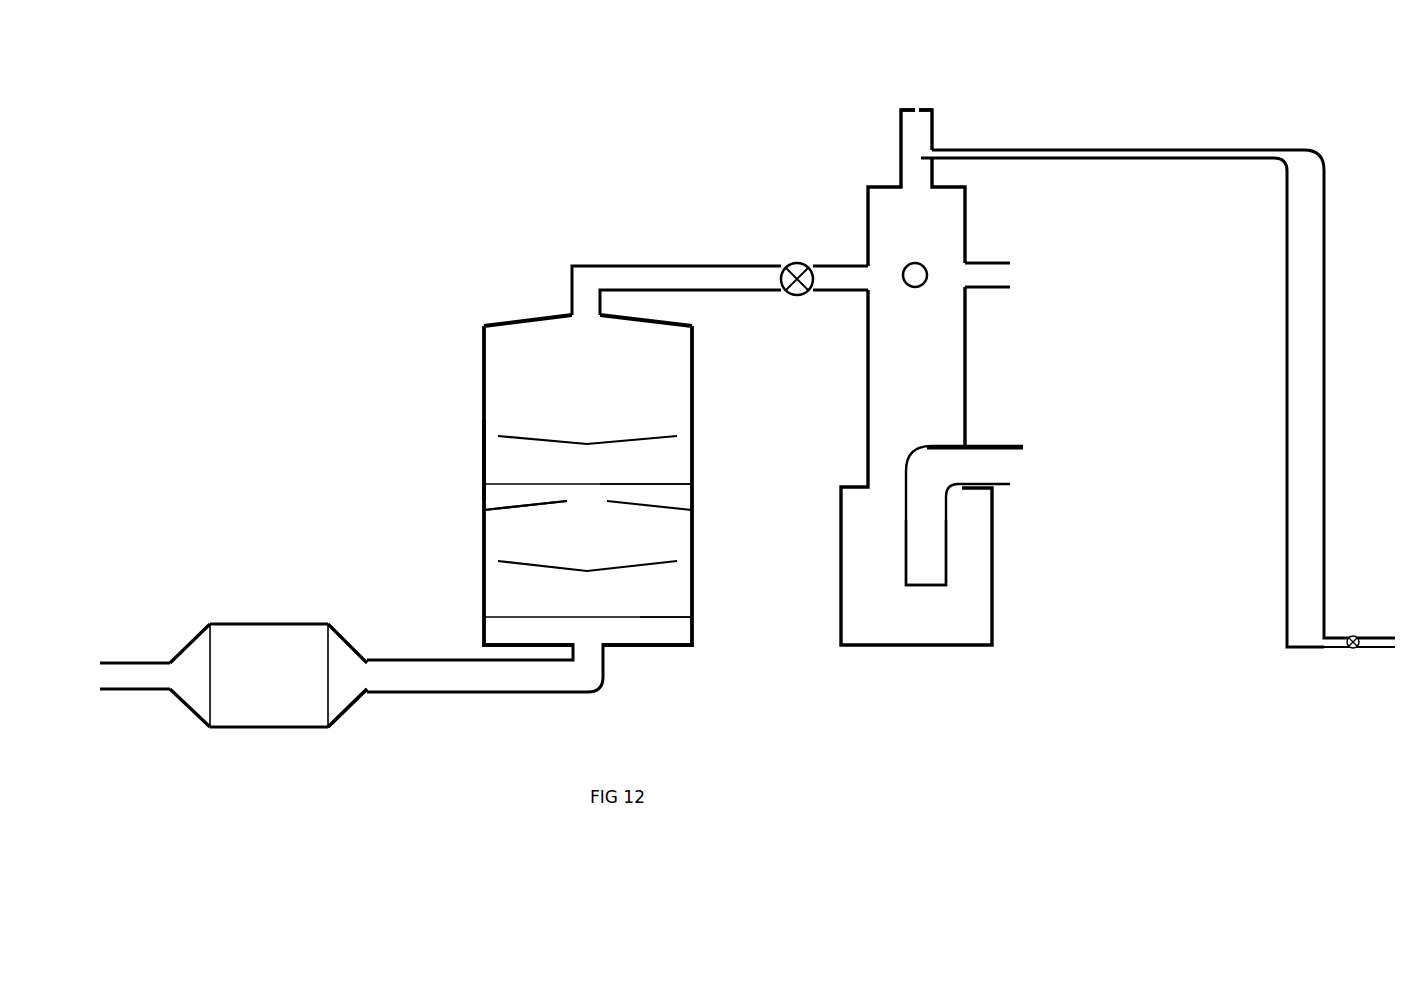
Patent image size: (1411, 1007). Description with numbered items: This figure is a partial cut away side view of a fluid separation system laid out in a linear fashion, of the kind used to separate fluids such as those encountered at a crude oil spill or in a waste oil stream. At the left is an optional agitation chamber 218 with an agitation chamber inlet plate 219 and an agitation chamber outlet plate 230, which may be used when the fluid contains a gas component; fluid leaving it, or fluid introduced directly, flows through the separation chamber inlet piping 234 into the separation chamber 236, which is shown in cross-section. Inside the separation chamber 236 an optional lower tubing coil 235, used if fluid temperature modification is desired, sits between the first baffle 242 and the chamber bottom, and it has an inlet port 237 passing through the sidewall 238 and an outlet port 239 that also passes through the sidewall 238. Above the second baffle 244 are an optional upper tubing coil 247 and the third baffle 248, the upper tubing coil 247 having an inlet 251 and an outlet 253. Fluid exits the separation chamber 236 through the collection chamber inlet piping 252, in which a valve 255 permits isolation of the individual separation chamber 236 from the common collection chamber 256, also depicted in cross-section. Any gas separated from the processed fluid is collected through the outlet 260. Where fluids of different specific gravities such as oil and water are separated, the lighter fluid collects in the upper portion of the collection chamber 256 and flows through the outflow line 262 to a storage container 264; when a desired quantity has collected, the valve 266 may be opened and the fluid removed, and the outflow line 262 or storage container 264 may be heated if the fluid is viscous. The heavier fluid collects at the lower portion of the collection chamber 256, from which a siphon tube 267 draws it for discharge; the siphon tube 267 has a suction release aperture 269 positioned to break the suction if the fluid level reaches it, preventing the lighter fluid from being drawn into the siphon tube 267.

The agitation chamber 218 is at (265, 742).
The agitation chamber inlet plate 219 is at (210, 727).
The agitation chamber outlet plate 230 is at (330, 730).
The separation chamber inlet piping 234 is at (538, 703).
The lower tubing coil 235 is at (597, 618).
The separation chamber 236 is at (610, 391).
The inlet port 237 is at (478, 617).
The sidewall 238 is at (484, 458).
The outlet port 239 is at (692, 617).
The first baffle 242 is at (537, 566).
The second baffle 244 is at (537, 504).
The upper tubing coil 247 is at (562, 486).
The third baffle 248 is at (623, 443).
The inlet 251 is at (475, 484).
The collection chamber inlet piping 252 is at (698, 258).
The outlet 253 is at (692, 484).
The valve 255 is at (800, 295).
The collection chamber 256 is at (938, 360).
The outlet 260 is at (918, 108).
The outflow line 262 is at (1095, 142).
The storage container 264 is at (1330, 417).
The valve 266 is at (1358, 637).
The siphon tube 267 is at (923, 549).
The suction release aperture 269 is at (923, 492).